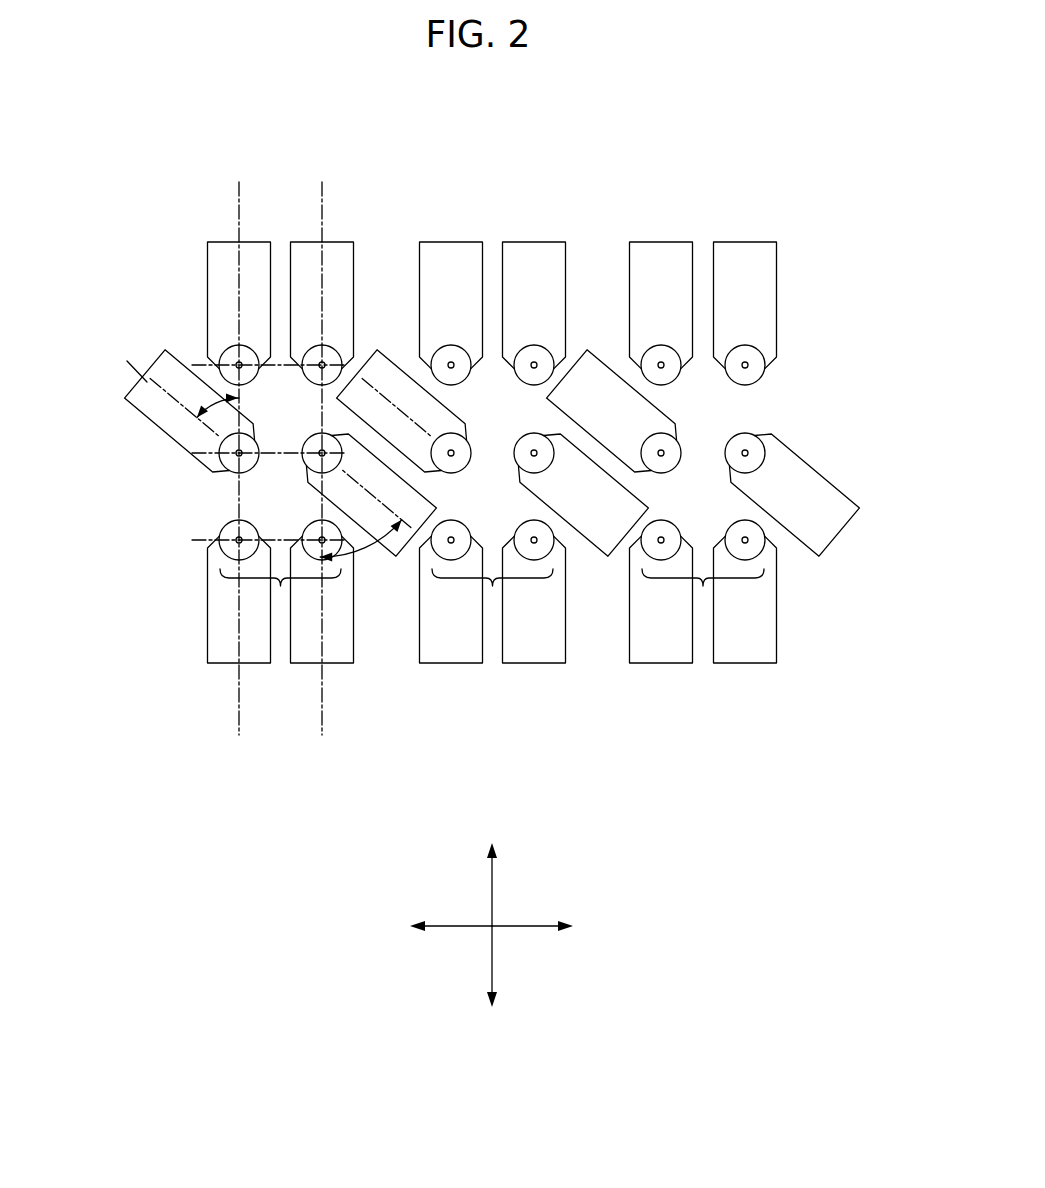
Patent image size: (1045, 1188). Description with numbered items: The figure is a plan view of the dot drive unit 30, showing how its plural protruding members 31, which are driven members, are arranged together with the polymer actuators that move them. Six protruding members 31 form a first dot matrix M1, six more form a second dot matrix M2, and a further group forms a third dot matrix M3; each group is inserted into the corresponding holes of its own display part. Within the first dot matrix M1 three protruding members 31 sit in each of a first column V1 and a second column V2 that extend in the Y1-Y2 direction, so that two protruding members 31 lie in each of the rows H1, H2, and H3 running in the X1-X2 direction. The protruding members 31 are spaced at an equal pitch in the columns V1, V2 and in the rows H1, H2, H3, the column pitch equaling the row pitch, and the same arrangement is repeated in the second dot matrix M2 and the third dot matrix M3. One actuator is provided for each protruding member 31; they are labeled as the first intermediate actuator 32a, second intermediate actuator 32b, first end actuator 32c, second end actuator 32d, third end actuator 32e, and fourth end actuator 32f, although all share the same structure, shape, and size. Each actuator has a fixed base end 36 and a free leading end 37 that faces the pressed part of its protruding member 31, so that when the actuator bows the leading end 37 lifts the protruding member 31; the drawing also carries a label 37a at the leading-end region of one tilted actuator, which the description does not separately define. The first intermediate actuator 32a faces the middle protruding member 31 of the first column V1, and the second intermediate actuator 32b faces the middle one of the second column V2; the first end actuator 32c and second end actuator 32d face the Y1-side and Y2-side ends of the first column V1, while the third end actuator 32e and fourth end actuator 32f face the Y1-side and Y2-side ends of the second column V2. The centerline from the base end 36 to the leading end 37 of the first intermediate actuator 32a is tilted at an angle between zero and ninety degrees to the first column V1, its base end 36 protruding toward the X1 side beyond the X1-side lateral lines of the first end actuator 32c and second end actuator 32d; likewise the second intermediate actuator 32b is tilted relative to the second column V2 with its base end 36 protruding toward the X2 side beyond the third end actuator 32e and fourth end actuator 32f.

The dot drive unit 30 is at (832, 436).
The protruding member 31 is at (331, 350).
The first intermediate actuator 32a is at (392, 557).
The second intermediate actuator 32b is at (137, 400).
The first end actuator 32c is at (335, 255).
The second end actuator 32d is at (335, 648).
The third end actuator 32e is at (214, 252).
The fourth end actuator 32f is at (222, 653).
The base end 36 is at (130, 378).
The leading end 37 is at (340, 430).
The edge of pivot portion 37a is at (405, 367).
The first dot matrix M1 is at (280, 588).
The second dot matrix M2 is at (492, 588).
The third dot matrix M3 is at (703, 588).
The row H1 is at (197, 363).
The row H2 is at (183, 452).
The row H3 is at (200, 541).
The first column V1 is at (322, 509).
The second column V2 is at (239, 497).
The X1 direction X1 is at (550, 927).
The X2 direction X2 is at (436, 927).
The Y1 direction Y1 is at (490, 870).
The Y2 direction Y2 is at (490, 984).